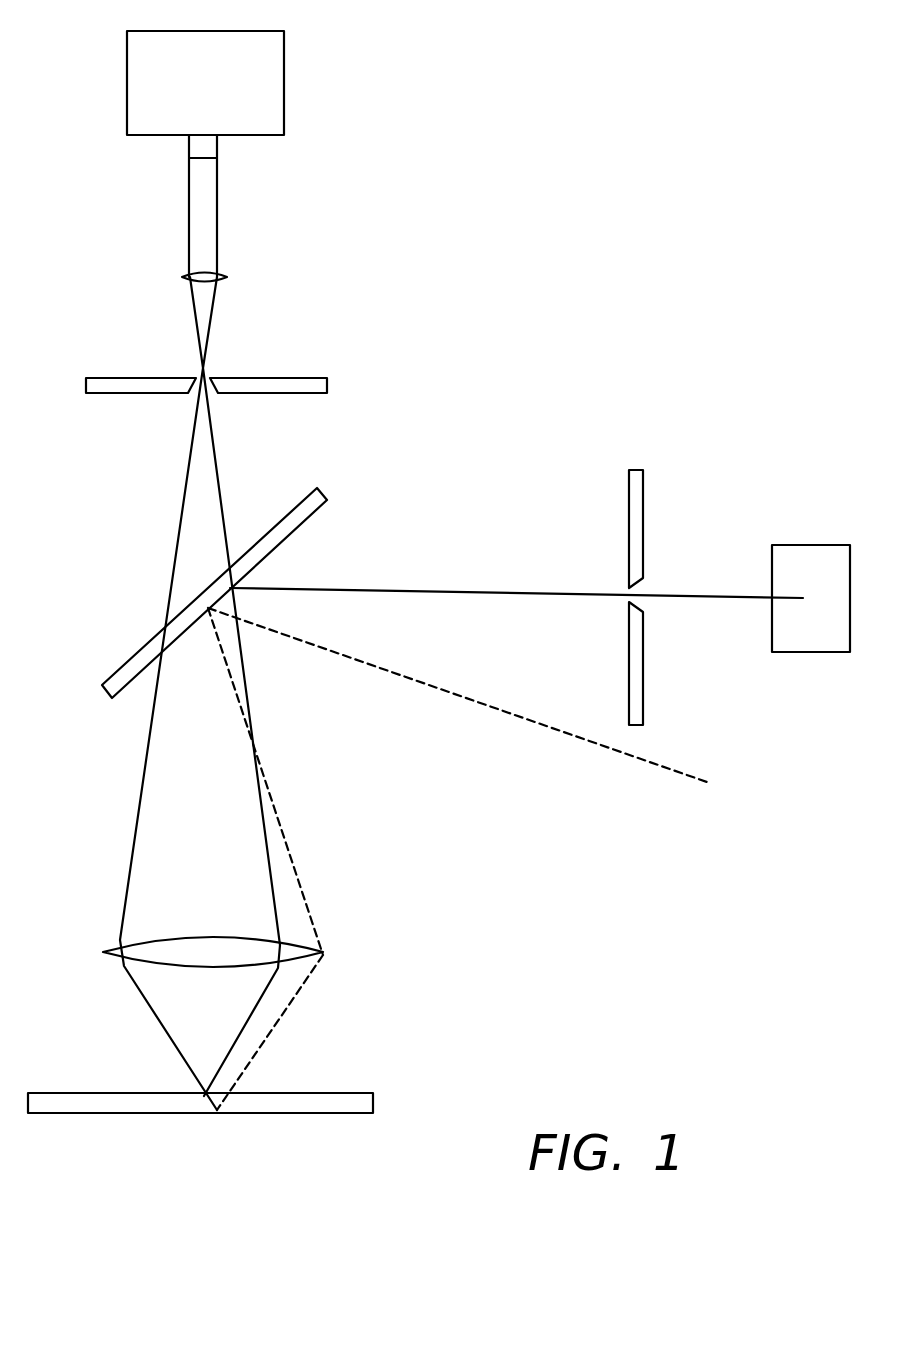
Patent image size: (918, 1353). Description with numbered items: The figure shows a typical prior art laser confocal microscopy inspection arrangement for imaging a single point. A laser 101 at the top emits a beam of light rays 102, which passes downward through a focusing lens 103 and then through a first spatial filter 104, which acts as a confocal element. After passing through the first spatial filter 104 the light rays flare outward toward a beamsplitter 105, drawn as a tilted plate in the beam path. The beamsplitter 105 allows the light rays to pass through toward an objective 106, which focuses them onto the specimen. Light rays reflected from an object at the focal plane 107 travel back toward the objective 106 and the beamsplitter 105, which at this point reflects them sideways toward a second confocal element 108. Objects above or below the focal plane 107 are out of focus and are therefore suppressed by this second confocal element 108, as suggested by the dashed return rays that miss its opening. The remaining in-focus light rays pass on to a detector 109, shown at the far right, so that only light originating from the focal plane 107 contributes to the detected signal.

The laser 101 is at (284, 98).
The beam of light rays 102 is at (218, 210).
The focusing lens 103 is at (227, 277).
The first spatial filter 104 is at (327, 387).
The beamsplitter 105 is at (327, 498).
The objective 106 is at (323, 955).
The focal plane 107 is at (331, 1088).
The second confocal element 108 is at (640, 470).
The detector 109 is at (810, 545).